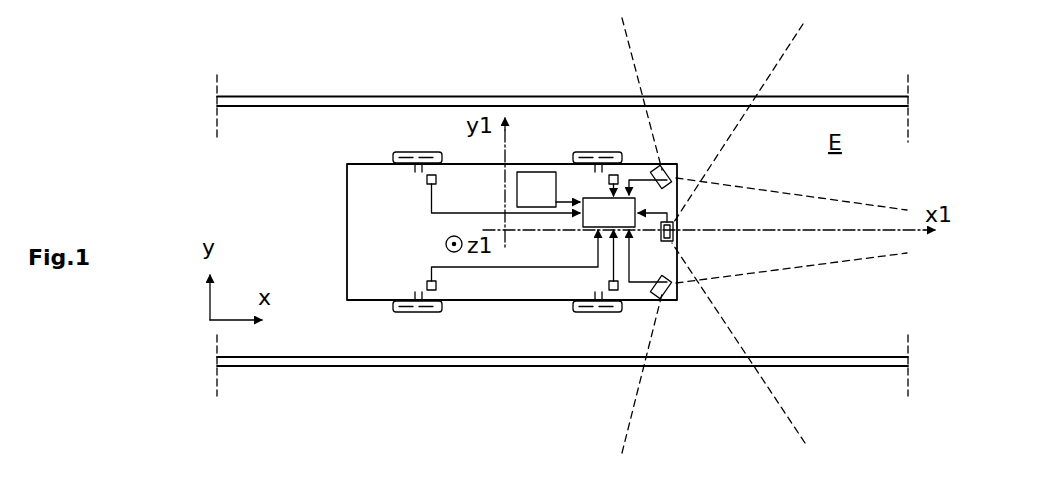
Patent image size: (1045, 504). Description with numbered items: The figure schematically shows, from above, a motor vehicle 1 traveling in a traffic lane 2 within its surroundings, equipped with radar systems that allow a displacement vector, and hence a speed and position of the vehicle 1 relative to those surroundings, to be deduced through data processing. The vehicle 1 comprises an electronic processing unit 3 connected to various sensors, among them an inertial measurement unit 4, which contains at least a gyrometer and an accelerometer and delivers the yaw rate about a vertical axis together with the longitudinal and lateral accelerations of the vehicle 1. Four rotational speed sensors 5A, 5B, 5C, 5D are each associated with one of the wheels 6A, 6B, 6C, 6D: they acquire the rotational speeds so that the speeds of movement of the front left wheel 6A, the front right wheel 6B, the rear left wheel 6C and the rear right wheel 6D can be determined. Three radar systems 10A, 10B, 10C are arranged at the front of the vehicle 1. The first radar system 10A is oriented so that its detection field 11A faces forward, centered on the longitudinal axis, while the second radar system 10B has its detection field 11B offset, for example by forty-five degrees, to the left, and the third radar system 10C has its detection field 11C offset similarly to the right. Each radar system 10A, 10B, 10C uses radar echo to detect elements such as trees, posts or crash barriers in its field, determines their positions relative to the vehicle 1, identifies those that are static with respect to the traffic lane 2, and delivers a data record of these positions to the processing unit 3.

The motor vehicle 1 is at (308, 191).
The traffic lane 2 is at (325, 367).
The electronic processing unit 3 is at (609, 212).
The inertial measurement unit 4 is at (548, 189).
The rotational speed sensor 5A is at (613, 175).
The rotational speed sensor 5B is at (609, 285).
The rotational speed sensor 5C is at (427, 180).
The rotational speed sensor 5D is at (427, 286).
The front left wheel 6A is at (583, 152).
The front right wheel 6B is at (583, 313).
The rear left wheel 6C is at (412, 152).
The rear right wheel 6D is at (418, 313).
The first radar system 10A is at (674, 236).
The second radar system 10B is at (667, 165).
The third radar system 10C is at (668, 295).
The detection field 11A is at (798, 34).
The detection field 11B is at (622, 22).
The detection field 11C is at (630, 430).